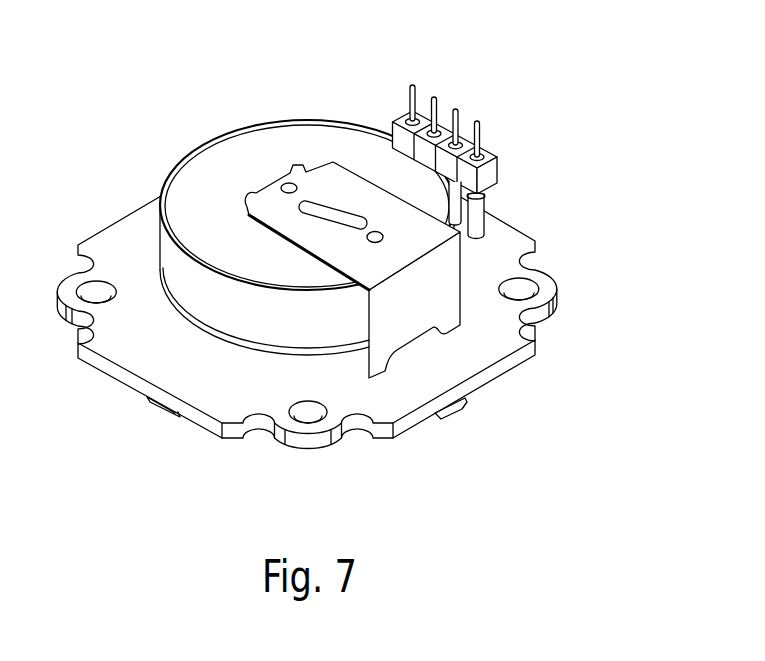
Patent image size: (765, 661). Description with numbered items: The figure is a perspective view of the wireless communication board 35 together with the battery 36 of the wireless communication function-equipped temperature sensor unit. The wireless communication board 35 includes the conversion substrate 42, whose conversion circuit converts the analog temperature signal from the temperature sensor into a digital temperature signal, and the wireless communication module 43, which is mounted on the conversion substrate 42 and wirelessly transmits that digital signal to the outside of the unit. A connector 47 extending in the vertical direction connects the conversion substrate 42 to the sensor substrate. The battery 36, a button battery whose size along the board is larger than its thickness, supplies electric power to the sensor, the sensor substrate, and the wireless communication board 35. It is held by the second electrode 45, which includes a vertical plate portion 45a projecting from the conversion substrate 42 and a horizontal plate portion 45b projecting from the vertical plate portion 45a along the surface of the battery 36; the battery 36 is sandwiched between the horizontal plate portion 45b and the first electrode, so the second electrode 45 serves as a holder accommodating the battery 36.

The wireless communication board 35 is at (95, 368).
The battery 36 is at (183, 186).
The conversion substrate 42 is at (217, 402).
The wireless communication module 43 is at (452, 412).
The second electrode 45 is at (435, 201).
The vertical plate portion 45a is at (453, 283).
The horizontal plate portion 45b is at (328, 173).
The connector 47 is at (490, 176).